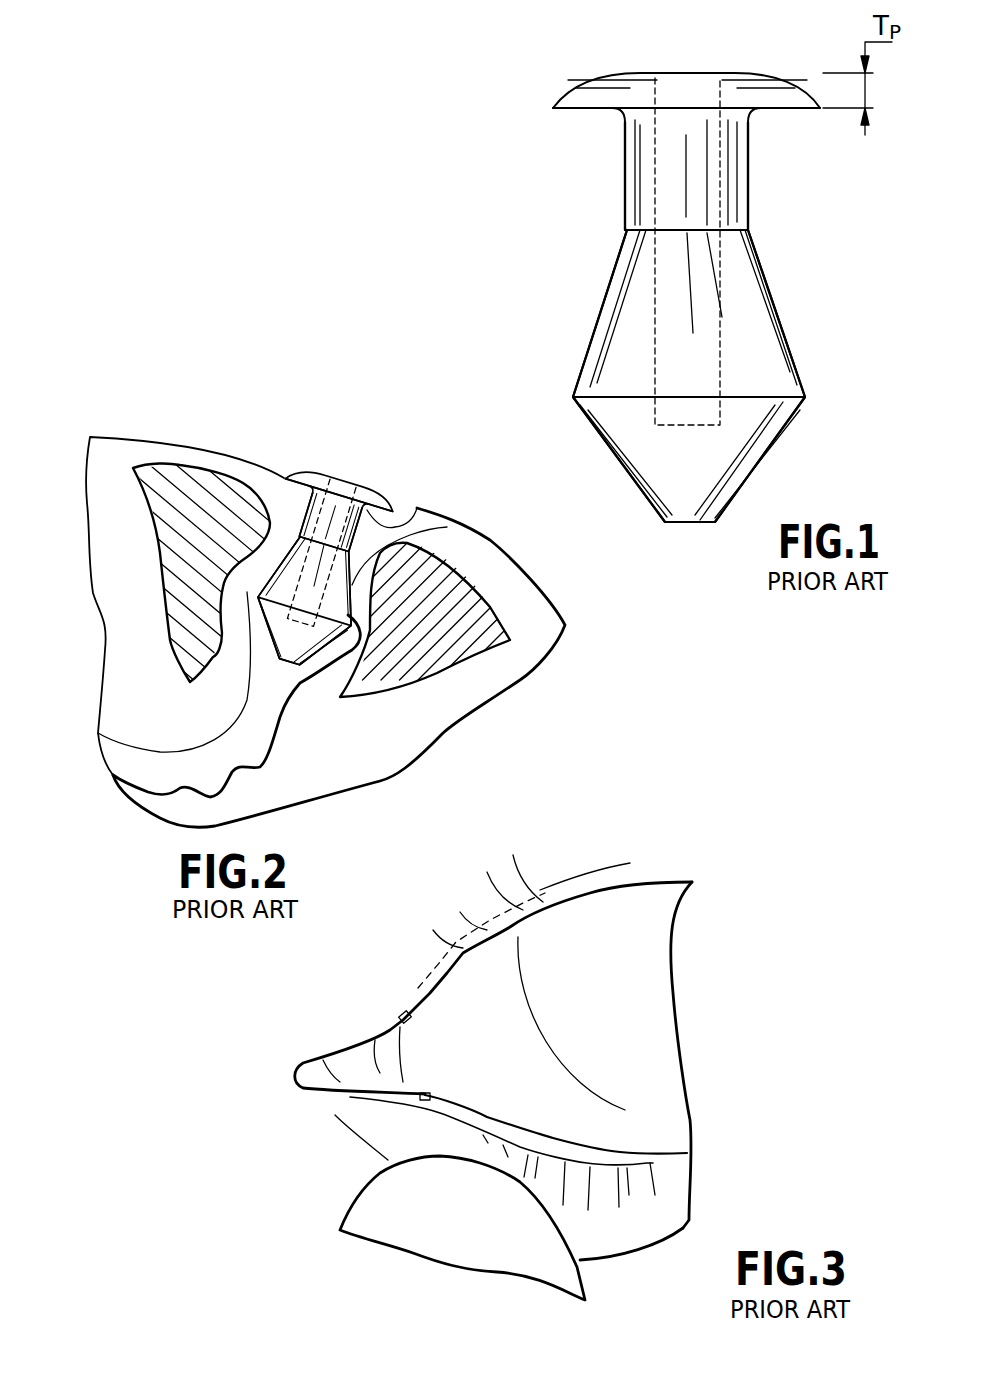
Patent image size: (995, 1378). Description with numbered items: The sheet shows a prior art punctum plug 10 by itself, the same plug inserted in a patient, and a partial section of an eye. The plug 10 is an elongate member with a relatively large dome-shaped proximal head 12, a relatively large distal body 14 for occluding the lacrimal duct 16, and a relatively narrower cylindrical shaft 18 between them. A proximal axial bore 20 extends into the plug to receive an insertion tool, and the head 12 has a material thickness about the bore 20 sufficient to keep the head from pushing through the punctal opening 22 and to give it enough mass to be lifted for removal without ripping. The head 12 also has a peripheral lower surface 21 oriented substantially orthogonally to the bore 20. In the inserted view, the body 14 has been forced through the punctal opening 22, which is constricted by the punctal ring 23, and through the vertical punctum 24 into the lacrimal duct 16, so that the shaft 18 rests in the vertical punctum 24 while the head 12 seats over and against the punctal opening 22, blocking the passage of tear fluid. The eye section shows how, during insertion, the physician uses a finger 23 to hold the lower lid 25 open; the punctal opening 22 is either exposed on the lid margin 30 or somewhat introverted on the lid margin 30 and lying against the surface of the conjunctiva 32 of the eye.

In FIG. 1, the punctum plug 10 is at (538, 45).
In FIG. 2, the punctum plug 10 is at (290, 553).
In FIG. 1, the proximal head 12 is at (625, 85).
In FIG. 2, the proximal head 12 is at (370, 498).
In FIG. 1, the distal body 14 is at (765, 430).
In FIG. 2, the distal body 14 is at (307, 652).
In FIG. 2, the lacrimal duct 16 is at (252, 703).
In FIG. 1, the cylindrical shaft 18 is at (735, 193).
In FIG. 2, the cylindrical shaft 18 is at (335, 570).
In FIG. 1, the proximal axial bore 20 is at (718, 130).
In FIG. 2, the proximal axial bore 20 is at (340, 497).
In FIG. 1, the peripheral lower surface 21 is at (640, 110).
In FIG. 2, the peripheral lower surface 21 is at (300, 506).
In FIG. 2, the punctal opening 22 is at (390, 528).
In FIG. 3, the punctal opening 22 is at (417, 1027).
In FIG. 2, the finger 23 is at (177, 528).
In FIG. 3, the finger 23 is at (445, 1216).
In FIG. 2, the vertical punctum 24 is at (335, 582).
In FIG. 3, the lower lid 25 is at (627, 1243).
In FIG. 3, the lid margin 30 is at (493, 1112).
In FIG. 3, the conjunctiva 32 is at (498, 1067).